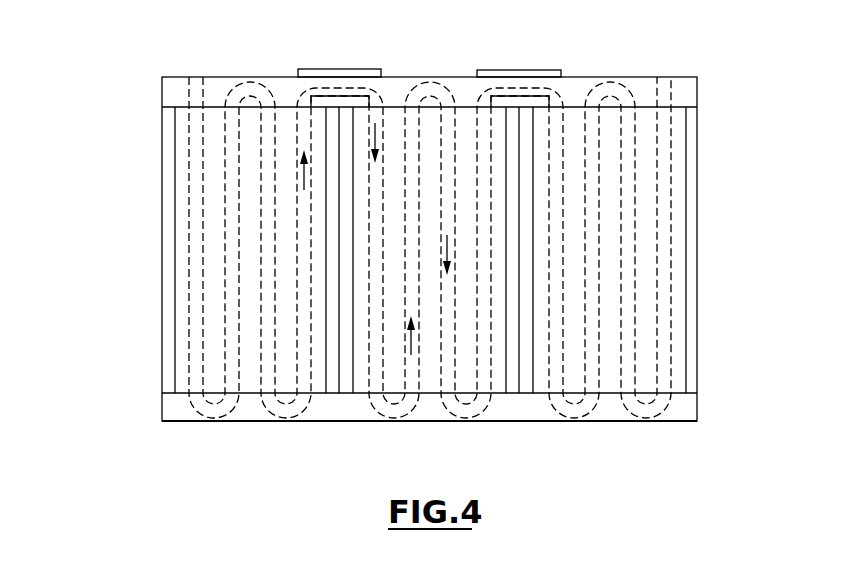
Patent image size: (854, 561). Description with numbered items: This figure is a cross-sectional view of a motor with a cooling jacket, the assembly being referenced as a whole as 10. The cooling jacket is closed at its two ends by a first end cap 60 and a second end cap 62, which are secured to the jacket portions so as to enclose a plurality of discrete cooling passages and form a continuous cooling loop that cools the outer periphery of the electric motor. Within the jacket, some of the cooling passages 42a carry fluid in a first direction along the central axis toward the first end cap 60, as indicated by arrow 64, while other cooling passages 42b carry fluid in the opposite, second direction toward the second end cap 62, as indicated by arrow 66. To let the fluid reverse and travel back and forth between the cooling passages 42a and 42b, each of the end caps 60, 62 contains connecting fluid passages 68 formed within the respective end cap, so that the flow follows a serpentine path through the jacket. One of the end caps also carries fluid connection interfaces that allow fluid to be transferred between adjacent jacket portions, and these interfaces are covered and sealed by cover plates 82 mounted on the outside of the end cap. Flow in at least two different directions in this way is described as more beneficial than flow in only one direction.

The heat exchanger 10 is at (130, 127).
The second end cap 62 is at (215, 90).
The first end cap 60 is at (322, 412).
The cover plate 82 is at (323, 76).
The connecting fluid passage 68 is at (412, 160).
The cooling passage 42b is at (433, 78).
The cooling passage 42a is at (374, 349).
The arrow 64 is at (380, 140).
The arrow 66 is at (413, 350).